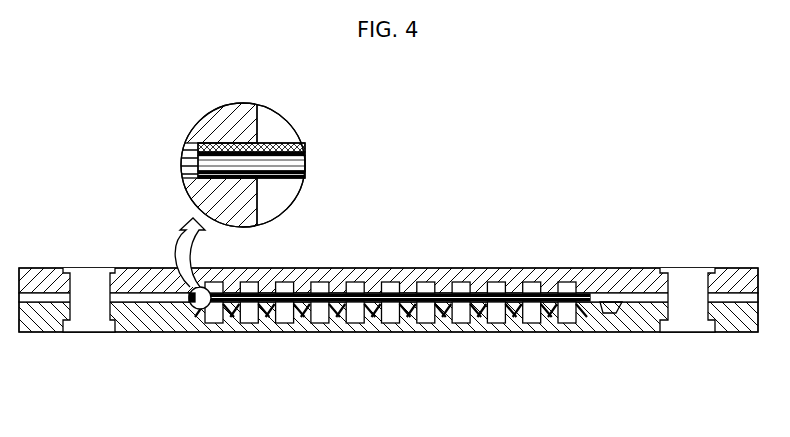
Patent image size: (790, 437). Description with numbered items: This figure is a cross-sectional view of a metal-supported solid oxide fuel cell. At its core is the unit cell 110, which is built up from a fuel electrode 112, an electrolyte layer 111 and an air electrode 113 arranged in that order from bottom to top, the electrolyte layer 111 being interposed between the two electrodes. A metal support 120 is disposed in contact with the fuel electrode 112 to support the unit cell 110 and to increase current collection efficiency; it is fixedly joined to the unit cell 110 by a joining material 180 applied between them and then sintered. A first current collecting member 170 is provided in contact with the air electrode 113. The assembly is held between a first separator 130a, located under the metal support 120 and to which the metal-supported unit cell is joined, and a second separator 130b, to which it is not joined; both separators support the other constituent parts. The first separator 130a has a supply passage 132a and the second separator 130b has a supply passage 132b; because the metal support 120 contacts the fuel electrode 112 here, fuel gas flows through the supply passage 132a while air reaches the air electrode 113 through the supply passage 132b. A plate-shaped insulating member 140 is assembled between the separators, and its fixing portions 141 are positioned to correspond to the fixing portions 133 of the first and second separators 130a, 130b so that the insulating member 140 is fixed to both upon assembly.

The unit cell 110 is at (440, 300).
The electrolyte layer 111 is at (198, 163).
The fuel electrode 112 is at (198, 175).
The air electrode 113 is at (198, 153).
The metal support 120 is at (212, 312).
The first separator 130a is at (300, 333).
The second separator 130b is at (295, 267).
The supply passage 132a is at (374, 322).
The supply passage 132b is at (533, 285).
The fixing portions 133 is at (692, 282).
The insulating member 140 is at (612, 312).
The fixing portions 141 is at (693, 298).
The first current collecting member 170 is at (307, 149).
The joining material 180 is at (307, 165).